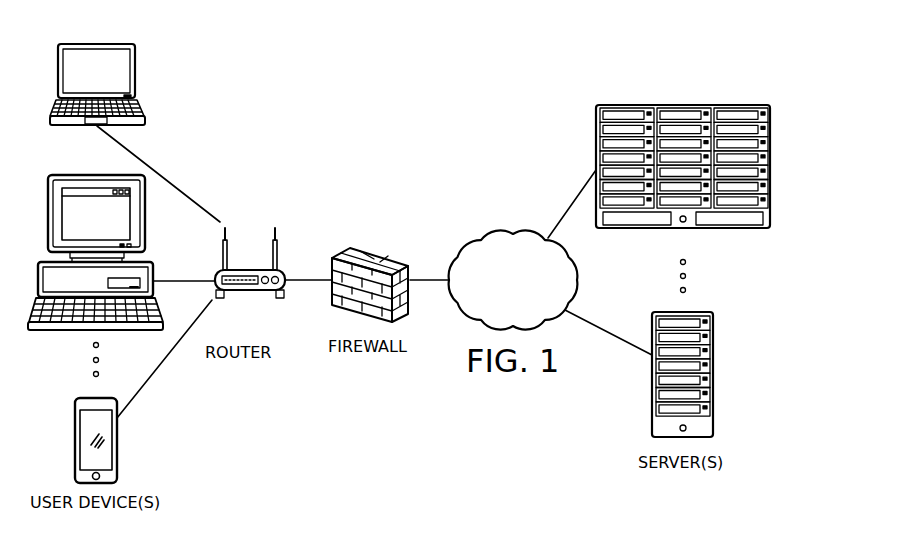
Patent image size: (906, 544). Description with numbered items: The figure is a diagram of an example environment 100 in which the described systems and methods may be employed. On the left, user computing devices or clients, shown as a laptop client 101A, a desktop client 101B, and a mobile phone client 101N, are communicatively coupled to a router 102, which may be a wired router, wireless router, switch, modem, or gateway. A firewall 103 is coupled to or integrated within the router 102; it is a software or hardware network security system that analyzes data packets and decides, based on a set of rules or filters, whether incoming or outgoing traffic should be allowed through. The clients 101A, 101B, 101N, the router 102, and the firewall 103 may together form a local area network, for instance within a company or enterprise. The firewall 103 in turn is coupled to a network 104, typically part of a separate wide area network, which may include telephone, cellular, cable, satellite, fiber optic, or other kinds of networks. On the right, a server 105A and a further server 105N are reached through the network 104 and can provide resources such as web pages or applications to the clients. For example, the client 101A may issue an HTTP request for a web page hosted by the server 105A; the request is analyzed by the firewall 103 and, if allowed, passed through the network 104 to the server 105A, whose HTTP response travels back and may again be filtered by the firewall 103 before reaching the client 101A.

The environment 100 is at (308, 71).
The client 101A is at (135, 75).
The client 101B is at (67, 332).
The client 101N is at (118, 445).
The router 102 is at (248, 293).
The firewall 103 is at (355, 250).
The network 104 is at (483, 236).
The server 105A is at (683, 105).
The server 105N is at (714, 376).